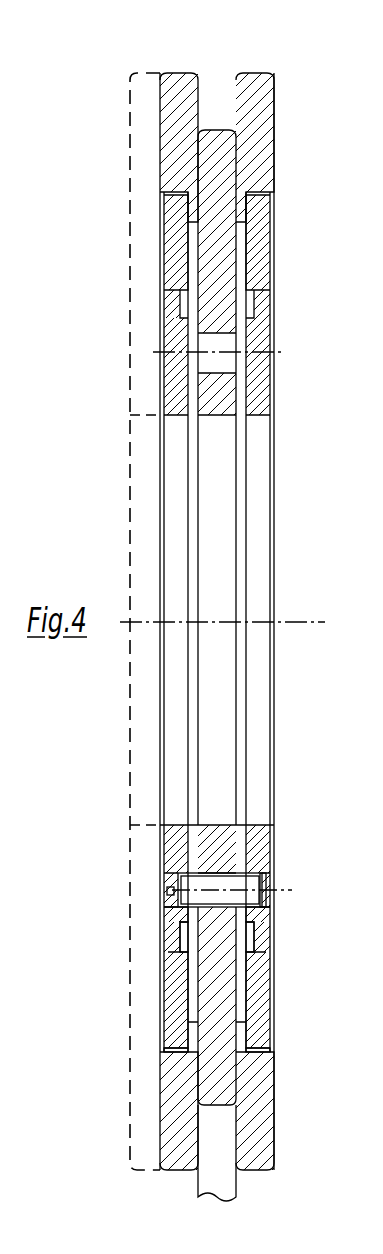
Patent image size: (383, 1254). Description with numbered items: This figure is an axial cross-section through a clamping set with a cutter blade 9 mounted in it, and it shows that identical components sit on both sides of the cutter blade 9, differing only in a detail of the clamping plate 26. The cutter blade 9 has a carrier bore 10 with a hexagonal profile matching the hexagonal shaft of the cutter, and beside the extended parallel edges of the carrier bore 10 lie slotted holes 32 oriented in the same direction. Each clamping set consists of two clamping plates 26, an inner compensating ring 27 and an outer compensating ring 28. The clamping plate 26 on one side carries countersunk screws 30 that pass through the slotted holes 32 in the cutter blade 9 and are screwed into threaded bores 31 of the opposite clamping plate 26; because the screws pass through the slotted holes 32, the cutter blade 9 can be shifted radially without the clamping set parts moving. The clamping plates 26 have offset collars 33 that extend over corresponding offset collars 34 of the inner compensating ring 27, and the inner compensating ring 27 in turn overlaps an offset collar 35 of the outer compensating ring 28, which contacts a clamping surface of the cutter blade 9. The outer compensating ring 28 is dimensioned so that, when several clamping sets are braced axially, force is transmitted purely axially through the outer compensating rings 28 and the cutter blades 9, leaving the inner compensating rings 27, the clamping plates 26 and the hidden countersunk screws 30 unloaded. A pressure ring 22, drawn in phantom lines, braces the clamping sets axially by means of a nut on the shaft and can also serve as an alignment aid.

The pressure ring 22 is at (175, 244).
The carrier bore 10 is at (158, 477).
The slotted holes 32 is at (178, 806).
The clamping plate 26 is at (204, 862).
The countersunk screw 30 is at (185, 886).
The threaded bore 31 is at (300, 883).
The offset collar of the clamping plate 33 is at (202, 977).
The offset collar of the inner compensating ring 34 is at (220, 965).
The offset collar of the outer compensating ring 35 is at (207, 1061).
The inner compensating ring 27 is at (259, 1006).
The outer compensating ring 28 is at (246, 1119).
The cutter blade 9 is at (242, 1161).